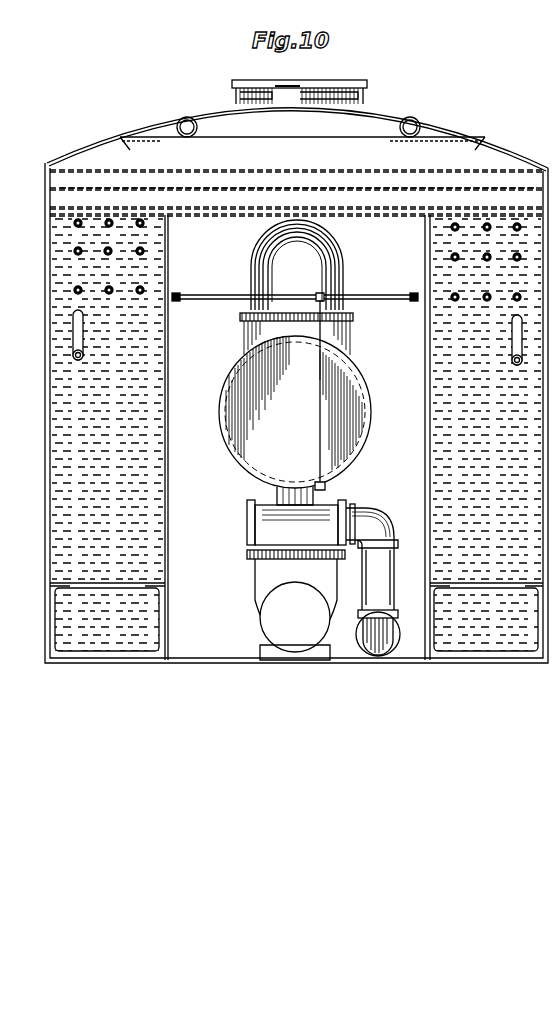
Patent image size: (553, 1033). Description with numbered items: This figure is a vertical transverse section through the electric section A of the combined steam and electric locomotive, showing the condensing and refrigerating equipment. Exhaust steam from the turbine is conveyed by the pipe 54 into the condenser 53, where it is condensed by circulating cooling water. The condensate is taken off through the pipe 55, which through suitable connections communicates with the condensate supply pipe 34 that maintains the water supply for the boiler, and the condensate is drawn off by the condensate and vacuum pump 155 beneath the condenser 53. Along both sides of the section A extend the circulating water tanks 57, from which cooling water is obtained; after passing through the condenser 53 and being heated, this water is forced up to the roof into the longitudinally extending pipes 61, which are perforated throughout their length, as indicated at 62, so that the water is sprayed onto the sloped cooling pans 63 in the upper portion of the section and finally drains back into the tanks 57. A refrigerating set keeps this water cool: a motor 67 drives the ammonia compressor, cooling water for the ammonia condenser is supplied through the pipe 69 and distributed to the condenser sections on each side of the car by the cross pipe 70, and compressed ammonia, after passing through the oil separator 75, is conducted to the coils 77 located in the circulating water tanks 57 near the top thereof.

The electric section A is at (83, 148).
The circulating water tanks 57 is at (50, 487).
The longitudinally extending pipes 61 is at (418, 118).
The perforations 62 is at (388, 130).
The cooling pans 63 is at (229, 186).
The motor 67 is at (340, 85).
The coils 77 is at (76, 289).
The oil separator 75 is at (514, 295).
The cross pipe 70 is at (211, 298).
The pipe 54 is at (343, 250).
The condenser 53 is at (371, 412).
The pipe 69 is at (326, 486).
The condensate and vacuum pump 155 is at (296, 573).
The pipe 55 is at (396, 552).
The condensate supply pipe 34 is at (392, 627).